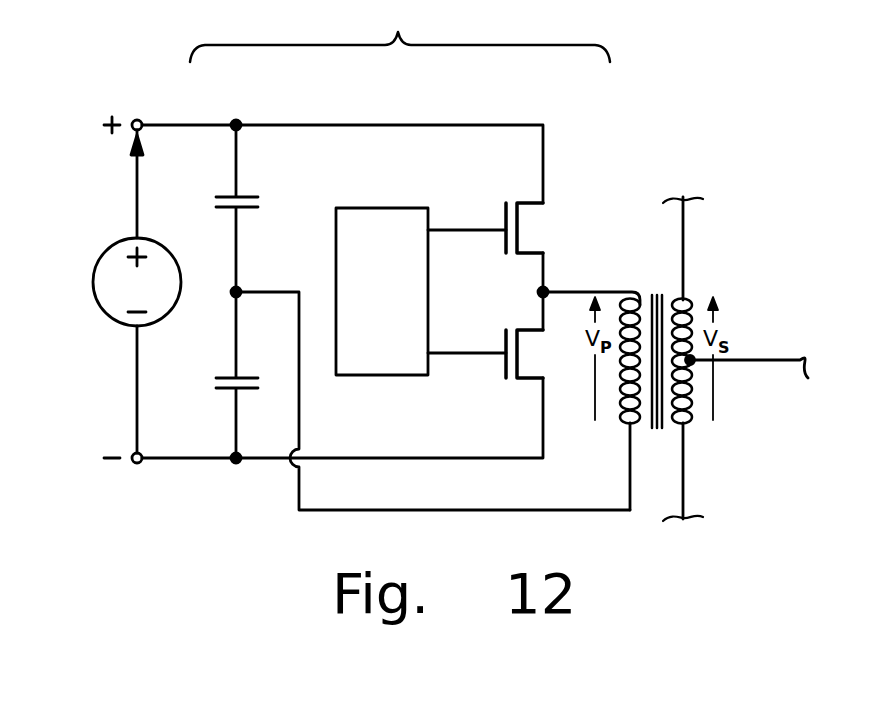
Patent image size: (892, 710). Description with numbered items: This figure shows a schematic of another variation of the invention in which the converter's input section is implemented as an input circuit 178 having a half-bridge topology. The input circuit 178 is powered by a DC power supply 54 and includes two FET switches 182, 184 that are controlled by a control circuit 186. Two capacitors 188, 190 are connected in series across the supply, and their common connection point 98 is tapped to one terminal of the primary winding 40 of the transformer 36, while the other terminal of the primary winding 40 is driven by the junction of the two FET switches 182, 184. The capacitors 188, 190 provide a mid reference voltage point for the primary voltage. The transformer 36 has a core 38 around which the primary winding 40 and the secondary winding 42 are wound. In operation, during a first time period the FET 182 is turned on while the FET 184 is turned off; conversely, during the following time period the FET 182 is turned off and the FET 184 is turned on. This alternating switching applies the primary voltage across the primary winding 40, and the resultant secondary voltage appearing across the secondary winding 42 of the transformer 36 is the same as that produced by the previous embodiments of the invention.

The input circuit 178 is at (400, 31).
The DC power supply 54 is at (100, 257).
The capacitor 188 is at (232, 194).
The capacitor 190 is at (226, 393).
The common connection point 98 is at (279, 290).
The control circuit 186 is at (413, 301).
The FET switch 182 is at (504, 214).
The FET switch 184 is at (503, 366).
The transformer 36 is at (696, 359).
The core 38 is at (657, 430).
The primary winding 40 is at (628, 422).
The secondary winding 42 is at (688, 422).